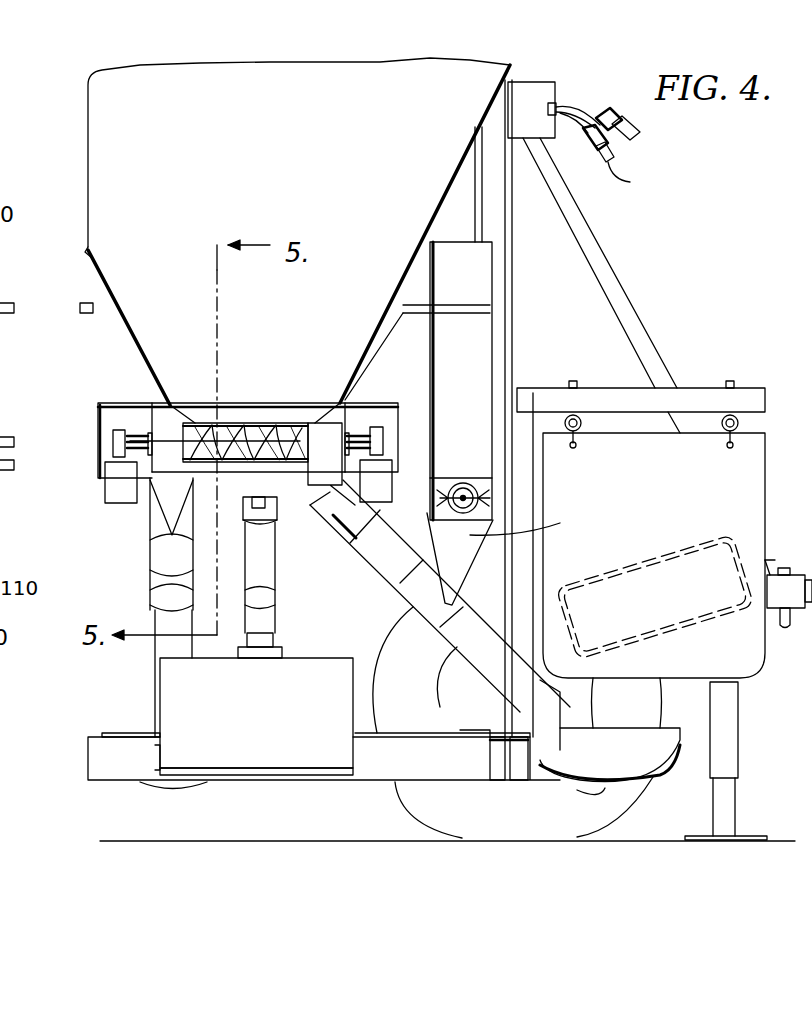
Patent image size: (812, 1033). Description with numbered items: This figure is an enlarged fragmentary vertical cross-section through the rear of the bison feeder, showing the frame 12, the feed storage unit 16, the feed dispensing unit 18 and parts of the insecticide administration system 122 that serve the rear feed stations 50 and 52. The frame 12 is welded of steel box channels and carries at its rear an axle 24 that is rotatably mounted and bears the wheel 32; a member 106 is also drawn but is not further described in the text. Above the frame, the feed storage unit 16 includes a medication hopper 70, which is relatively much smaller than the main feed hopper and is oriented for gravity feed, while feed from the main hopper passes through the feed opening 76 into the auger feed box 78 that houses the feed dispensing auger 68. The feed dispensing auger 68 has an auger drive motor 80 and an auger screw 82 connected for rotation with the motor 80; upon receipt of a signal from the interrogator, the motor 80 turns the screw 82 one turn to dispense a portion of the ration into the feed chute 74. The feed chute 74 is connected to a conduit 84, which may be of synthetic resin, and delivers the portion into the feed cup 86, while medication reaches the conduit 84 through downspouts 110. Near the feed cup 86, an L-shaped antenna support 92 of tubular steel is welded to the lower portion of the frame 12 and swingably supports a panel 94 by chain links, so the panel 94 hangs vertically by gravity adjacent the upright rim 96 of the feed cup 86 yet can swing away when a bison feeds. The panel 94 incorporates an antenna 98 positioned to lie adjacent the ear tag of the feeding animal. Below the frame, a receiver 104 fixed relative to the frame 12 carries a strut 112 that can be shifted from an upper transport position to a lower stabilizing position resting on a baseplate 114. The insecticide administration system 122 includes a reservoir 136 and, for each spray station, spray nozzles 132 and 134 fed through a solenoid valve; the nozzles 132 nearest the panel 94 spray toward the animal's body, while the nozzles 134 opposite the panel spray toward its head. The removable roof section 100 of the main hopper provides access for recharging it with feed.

The feed storage unit 16 is at (97, 74).
The insecticide administration system 122 is at (582, 97).
The spray nozzles 132 is at (615, 124).
The spray nozzles 134 is at (630, 182).
The frame brace 106 is at (598, 305).
The medication hopper 70 is at (458, 262).
The antenna support 92 is at (705, 400).
The panel 94 is at (752, 490).
The antenna 98 is at (655, 540).
The removable roof section 100 is at (785, 568).
The receiver 104 is at (793, 610).
The strut 112 is at (735, 725).
The baseplate 114 is at (730, 836).
The feed dispensing unit 18 is at (96, 440).
The auger screw 82 is at (262, 430).
The feed dispensing auger 68 is at (235, 420).
The feed opening 76 is at (205, 420).
The auger feed box 78 is at (402, 420).
The auger drive motor 80 is at (110, 492).
The downspout 110 is at (150, 555).
The feed chute 74 is at (155, 525).
The conduit 84 is at (155, 650).
The reservoir 136 is at (318, 660).
The frame 12 is at (90, 760).
The feed station 52 is at (192, 790).
The wheel 32 is at (427, 807).
The axle 24 is at (512, 782).
The upright rim 96 is at (662, 740).
The feed cup 86 is at (660, 775).
The feed station 50 is at (607, 788).